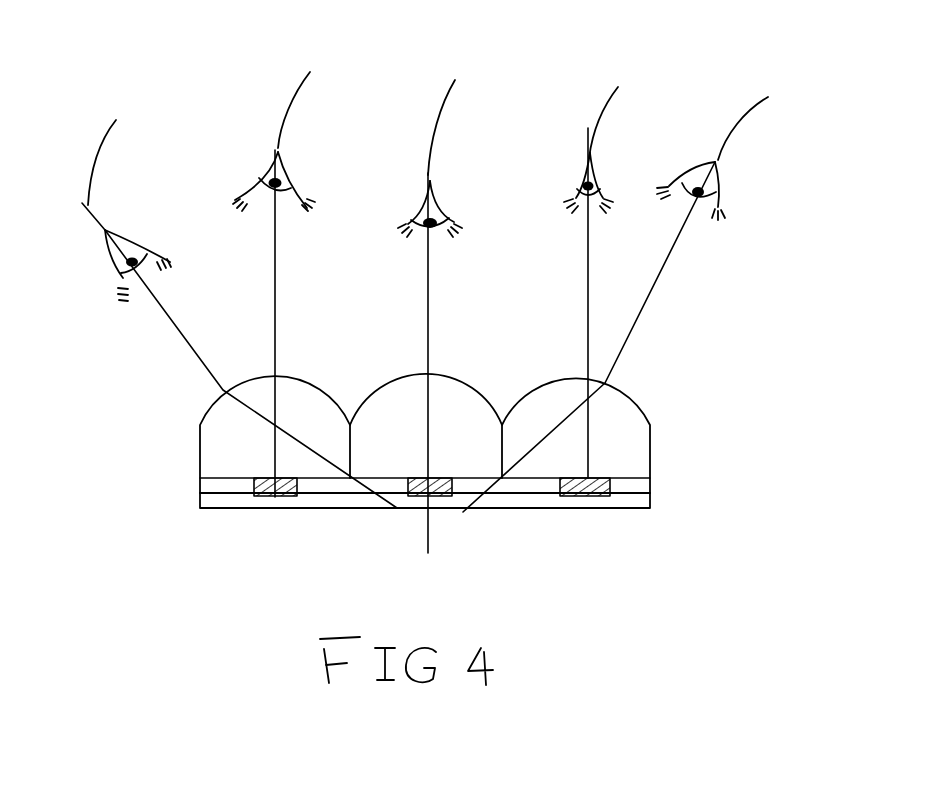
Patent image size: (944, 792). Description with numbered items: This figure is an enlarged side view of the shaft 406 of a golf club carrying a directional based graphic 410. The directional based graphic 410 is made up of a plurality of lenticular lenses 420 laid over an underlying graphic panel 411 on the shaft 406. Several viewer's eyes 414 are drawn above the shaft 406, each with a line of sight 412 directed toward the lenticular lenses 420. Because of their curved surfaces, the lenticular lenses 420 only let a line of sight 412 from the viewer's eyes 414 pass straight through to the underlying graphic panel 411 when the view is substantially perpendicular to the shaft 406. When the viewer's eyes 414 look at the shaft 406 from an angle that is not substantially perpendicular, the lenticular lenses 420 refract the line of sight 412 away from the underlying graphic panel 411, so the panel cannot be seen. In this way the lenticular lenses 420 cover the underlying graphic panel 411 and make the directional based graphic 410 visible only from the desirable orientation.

The shaft 406 is at (653, 503).
The directional based graphic 410 is at (402, 499).
The underlying graphic panel 411 is at (268, 498).
The line of sight 412 is at (177, 318).
The viewer's eyes 414 is at (450, 166).
The lenticular lenses 420 is at (200, 415).